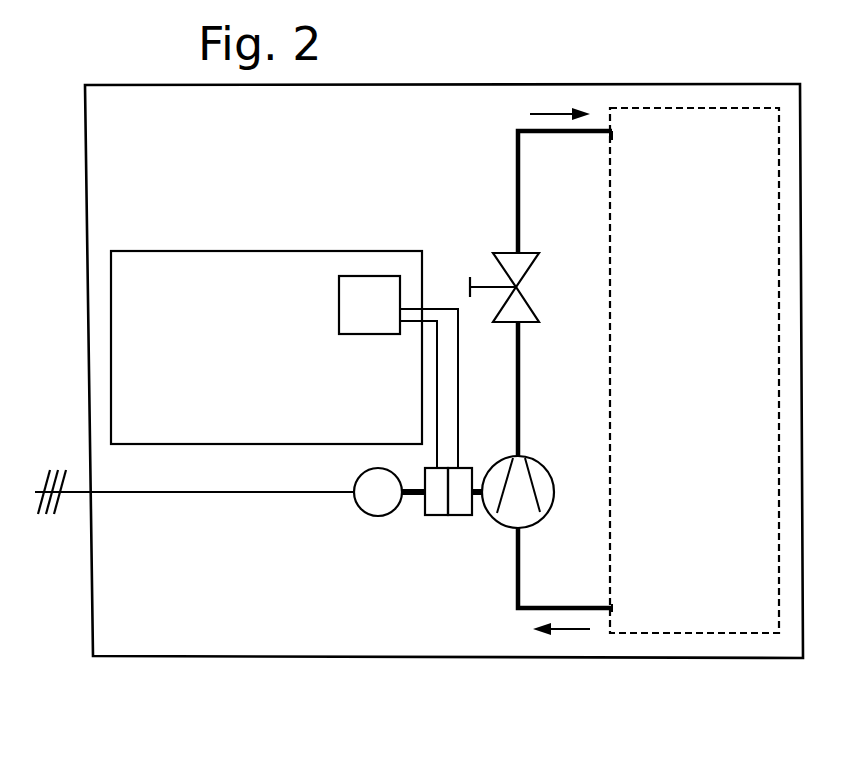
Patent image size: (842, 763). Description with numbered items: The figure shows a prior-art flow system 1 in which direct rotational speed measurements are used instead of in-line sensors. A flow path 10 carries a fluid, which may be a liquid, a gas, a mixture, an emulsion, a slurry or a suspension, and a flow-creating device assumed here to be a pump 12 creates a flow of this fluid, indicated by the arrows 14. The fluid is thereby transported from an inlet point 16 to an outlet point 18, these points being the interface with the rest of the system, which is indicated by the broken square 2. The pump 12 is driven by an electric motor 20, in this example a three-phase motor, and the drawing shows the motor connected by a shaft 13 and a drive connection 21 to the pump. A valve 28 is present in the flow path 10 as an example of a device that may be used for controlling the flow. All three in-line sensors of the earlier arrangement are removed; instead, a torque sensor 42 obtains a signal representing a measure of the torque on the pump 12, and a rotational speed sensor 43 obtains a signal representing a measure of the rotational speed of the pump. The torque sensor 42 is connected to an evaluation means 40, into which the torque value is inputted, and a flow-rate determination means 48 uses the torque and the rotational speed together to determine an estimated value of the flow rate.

The flow system 1 is at (775, 658).
The rest of the system 2 is at (700, 633).
The flow path 10 is at (518, 195).
The pump 12 is at (525, 505).
The drive shaft 13 is at (408, 497).
The arrows 14 is at (543, 117).
The inlet point 16 is at (614, 608).
The outlet point 18 is at (612, 133).
The electric motor 20 is at (380, 516).
The drive connection 21 is at (305, 492).
The valve 28 is at (525, 315).
The evaluation means 40 is at (212, 263).
The torque sensor 42 is at (466, 516).
The rotational speed sensor 43 is at (439, 516).
The flow-rate determination means 48 is at (340, 299).